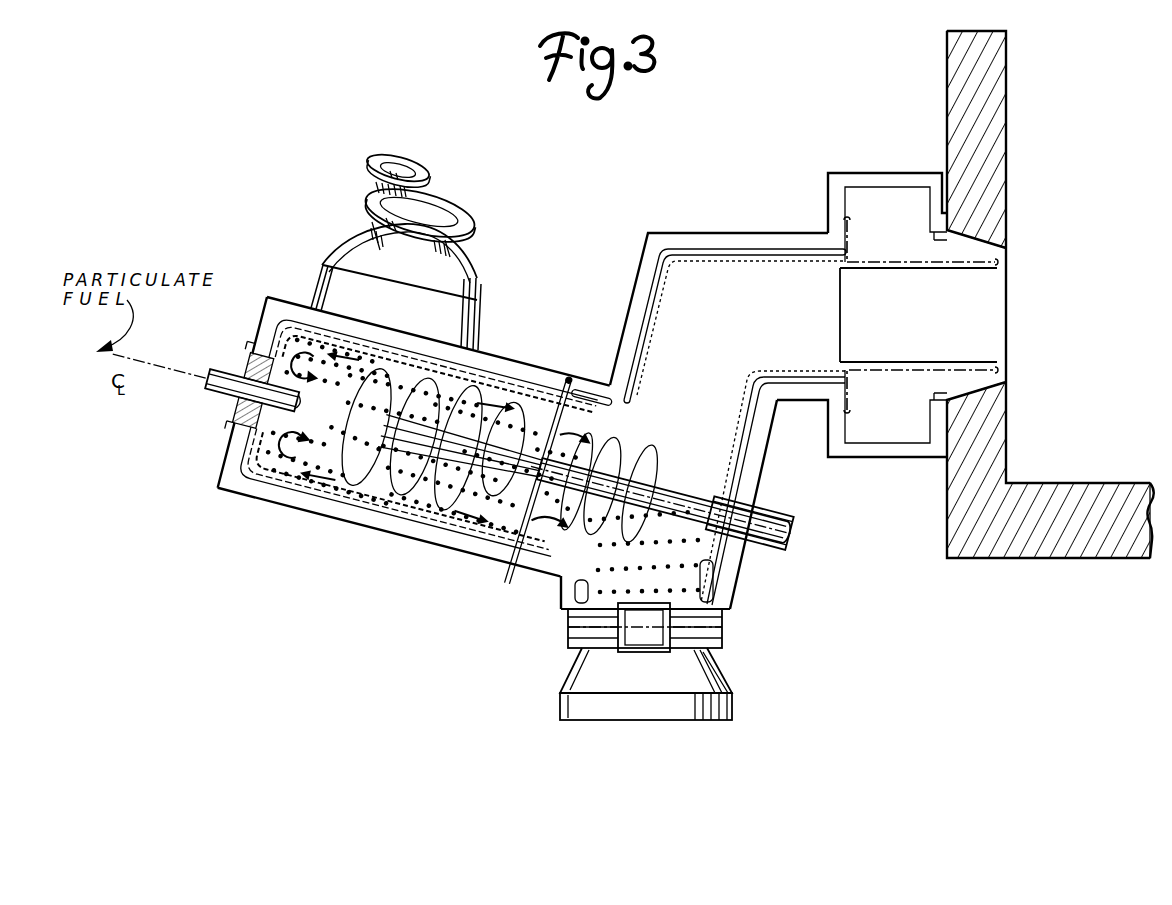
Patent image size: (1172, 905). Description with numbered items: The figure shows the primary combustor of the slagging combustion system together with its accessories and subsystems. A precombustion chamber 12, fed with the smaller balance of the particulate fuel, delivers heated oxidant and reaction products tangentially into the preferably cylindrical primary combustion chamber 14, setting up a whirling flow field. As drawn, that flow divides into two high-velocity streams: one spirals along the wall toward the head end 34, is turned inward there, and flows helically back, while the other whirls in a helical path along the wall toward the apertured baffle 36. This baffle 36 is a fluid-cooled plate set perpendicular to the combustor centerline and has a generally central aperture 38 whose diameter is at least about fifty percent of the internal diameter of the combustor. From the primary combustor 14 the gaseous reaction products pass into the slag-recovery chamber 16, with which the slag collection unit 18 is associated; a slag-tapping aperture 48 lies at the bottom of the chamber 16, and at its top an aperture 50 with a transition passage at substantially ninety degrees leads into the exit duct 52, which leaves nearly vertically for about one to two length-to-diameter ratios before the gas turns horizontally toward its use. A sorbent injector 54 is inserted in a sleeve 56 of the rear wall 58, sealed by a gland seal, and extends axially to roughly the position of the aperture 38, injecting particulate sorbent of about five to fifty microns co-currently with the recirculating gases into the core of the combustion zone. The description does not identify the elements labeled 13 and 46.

The precombustion chamber 12 is at (482, 271).
The flame vortices 13 is at (636, 452).
The primary combustion chamber 14 is at (258, 501).
The slag-recovery chamber 16 is at (721, 474).
The slag collection unit 18 is at (735, 706).
The head end 34 is at (216, 471).
The apertured baffle 36 is at (393, 365).
The aperture 38 is at (620, 428).
The fuel inlet tube 46 is at (218, 372).
The slag-tapping aperture 48 is at (650, 617).
The aperture 50 is at (715, 417).
The exit duct 52 is at (750, 240).
The sorbent injector 54 is at (792, 529).
The sleeve 56 is at (779, 549).
The rear wall 58 is at (764, 470).